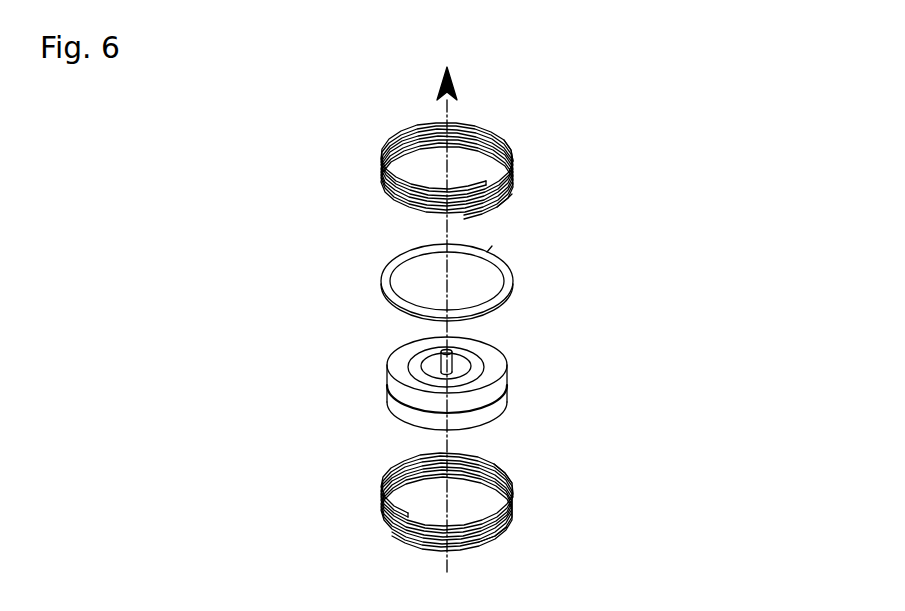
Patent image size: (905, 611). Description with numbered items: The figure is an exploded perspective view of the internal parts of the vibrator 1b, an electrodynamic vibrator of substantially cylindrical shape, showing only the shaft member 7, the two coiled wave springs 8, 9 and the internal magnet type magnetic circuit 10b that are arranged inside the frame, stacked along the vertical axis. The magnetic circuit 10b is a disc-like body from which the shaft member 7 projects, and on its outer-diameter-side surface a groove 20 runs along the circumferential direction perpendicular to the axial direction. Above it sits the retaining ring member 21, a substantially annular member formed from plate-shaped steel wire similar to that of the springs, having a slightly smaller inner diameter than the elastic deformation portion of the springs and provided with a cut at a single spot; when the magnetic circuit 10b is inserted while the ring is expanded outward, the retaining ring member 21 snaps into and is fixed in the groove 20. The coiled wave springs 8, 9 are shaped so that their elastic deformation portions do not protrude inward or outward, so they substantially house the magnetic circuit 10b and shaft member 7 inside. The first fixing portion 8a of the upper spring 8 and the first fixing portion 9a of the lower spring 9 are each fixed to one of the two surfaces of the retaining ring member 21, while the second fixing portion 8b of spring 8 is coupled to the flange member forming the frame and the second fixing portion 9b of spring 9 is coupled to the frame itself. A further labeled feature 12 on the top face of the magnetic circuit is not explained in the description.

The vibrator 1b is at (286, 116).
The shaft member 7 is at (441, 351).
The coiled wave spring 8 is at (513, 170).
The first fixing portion 8a is at (503, 201).
The second fixing portion 8b is at (512, 148).
The coiled wave spring 9 is at (513, 510).
The first fixing portion 9a is at (507, 474).
The second fixing portion 9b is at (493, 537).
The magnetic circuit 10b is at (516, 336).
The annular recess 12 is at (497, 363).
The groove 20 is at (505, 393).
The retaining ring member 21 is at (513, 280).